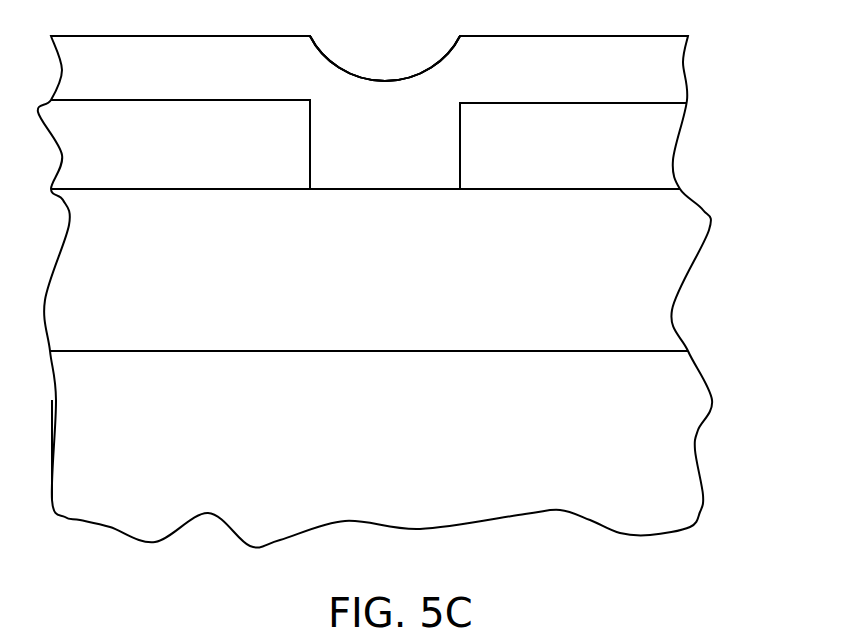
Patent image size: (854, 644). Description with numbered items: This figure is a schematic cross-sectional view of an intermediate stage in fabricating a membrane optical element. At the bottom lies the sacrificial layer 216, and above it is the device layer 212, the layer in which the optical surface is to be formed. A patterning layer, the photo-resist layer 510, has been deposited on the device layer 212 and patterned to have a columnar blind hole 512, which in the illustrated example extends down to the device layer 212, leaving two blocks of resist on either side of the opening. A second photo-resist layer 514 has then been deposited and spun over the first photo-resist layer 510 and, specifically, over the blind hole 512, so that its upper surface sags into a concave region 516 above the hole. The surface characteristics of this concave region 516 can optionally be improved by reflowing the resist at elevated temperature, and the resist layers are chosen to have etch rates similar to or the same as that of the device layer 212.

The second photo-resist layer 514 is at (683, 62).
The concave region 516 is at (328, 57).
The photo-resist layer 510 is at (683, 128).
The columnar blind hole 512 is at (312, 160).
The device layer 212 is at (690, 270).
The sacrificial layer 216 is at (703, 430).